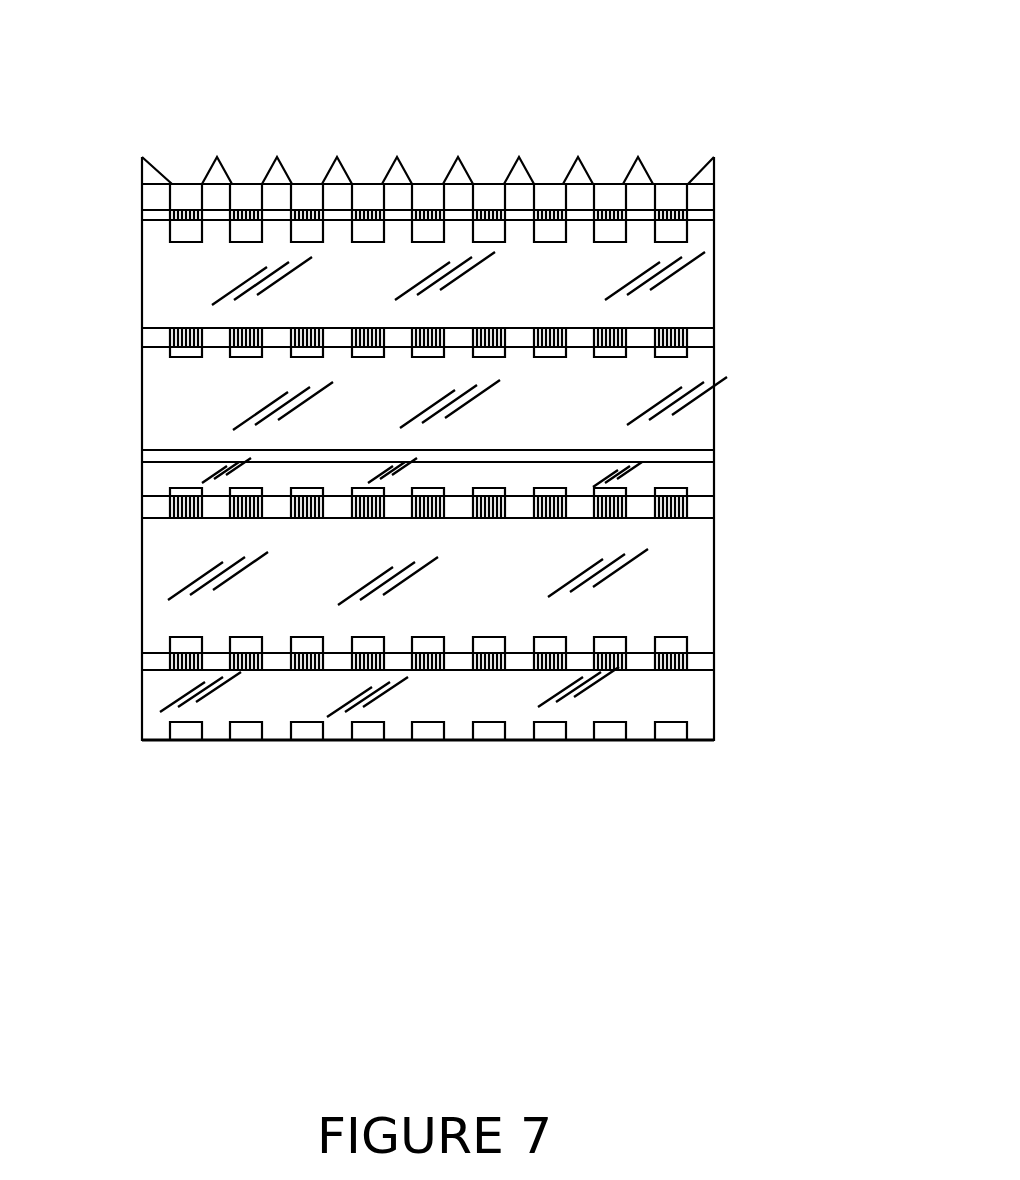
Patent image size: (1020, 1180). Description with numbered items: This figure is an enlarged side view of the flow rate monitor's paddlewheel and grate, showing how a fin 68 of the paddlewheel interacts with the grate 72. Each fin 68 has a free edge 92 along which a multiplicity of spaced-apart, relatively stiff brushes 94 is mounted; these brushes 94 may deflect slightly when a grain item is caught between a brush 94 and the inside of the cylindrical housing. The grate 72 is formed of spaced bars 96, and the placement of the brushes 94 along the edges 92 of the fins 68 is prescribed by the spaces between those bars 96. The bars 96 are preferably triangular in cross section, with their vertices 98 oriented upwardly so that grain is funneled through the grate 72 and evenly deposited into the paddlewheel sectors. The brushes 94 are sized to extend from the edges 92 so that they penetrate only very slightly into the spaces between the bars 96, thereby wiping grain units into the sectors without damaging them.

The fin 68 is at (698, 302).
The grate 72 is at (716, 155).
The free edge 92 is at (712, 213).
The brush 94 is at (182, 195).
The bar 96 is at (207, 183).
The vertex 98 is at (520, 160).